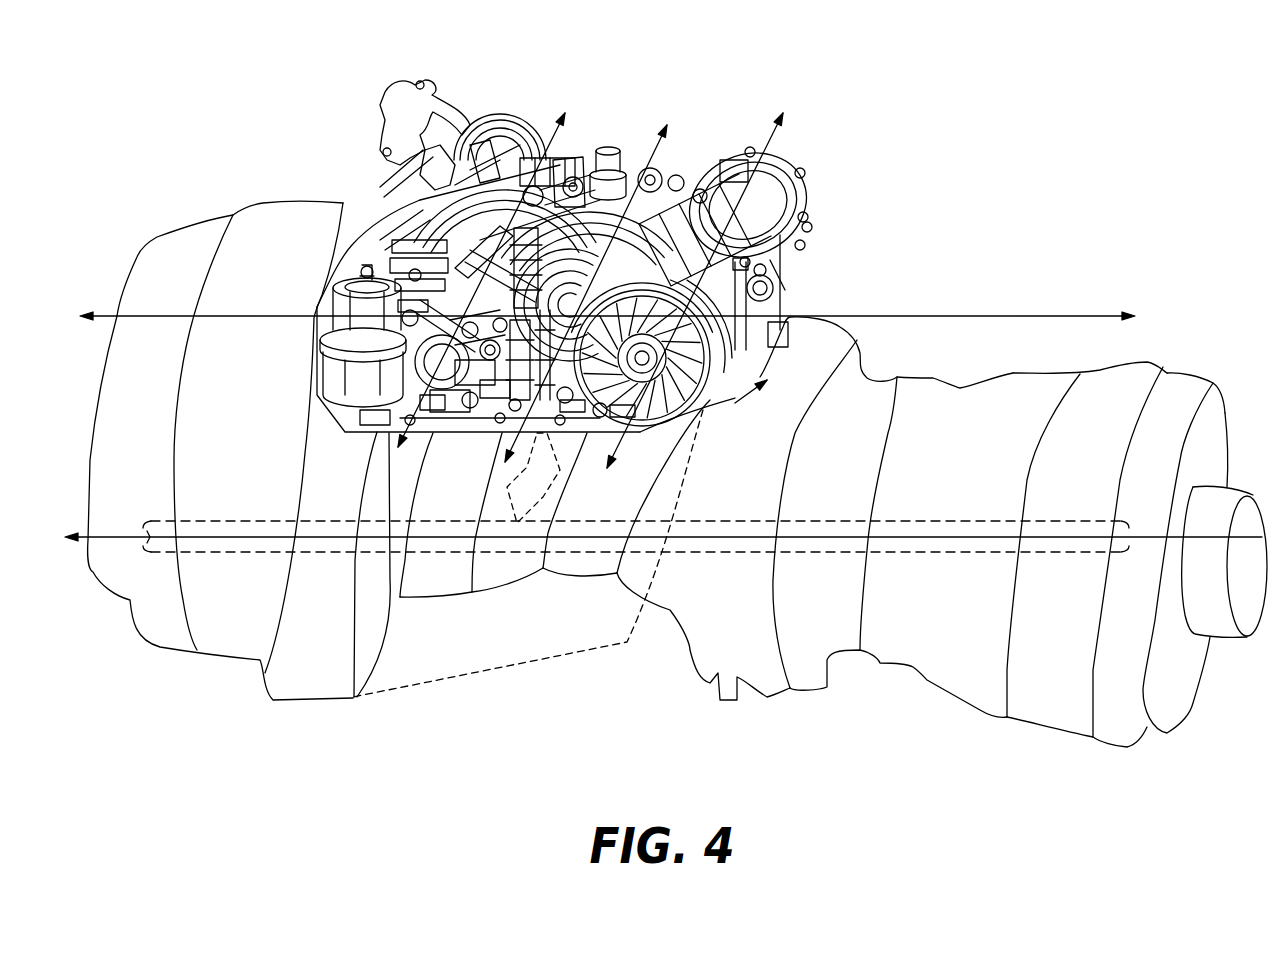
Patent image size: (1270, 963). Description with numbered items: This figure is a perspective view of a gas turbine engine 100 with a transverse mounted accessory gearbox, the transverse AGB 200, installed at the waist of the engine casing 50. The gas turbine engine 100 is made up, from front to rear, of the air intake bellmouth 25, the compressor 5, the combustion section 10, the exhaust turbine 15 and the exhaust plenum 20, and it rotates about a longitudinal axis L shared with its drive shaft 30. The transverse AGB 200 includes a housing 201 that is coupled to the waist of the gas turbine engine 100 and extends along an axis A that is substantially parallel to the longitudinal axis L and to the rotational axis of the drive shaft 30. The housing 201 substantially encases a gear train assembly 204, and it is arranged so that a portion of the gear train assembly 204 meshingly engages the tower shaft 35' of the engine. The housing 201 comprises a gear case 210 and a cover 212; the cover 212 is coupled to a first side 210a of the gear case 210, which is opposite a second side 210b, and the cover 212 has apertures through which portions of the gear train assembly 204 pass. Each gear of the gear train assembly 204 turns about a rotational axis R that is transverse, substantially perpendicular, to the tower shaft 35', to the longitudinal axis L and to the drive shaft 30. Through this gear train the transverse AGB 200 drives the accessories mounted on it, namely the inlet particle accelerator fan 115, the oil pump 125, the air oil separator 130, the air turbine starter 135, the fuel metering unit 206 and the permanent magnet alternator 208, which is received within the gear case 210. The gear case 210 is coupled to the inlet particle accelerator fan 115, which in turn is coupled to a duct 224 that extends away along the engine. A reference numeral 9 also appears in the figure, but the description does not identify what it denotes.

The compressor 5 is at (510, 580).
The rotational axis 9 is at (360, 428).
The combustion section 10 is at (847, 390).
The exhaust turbine 15 is at (1040, 398).
The exhaust plenum 20 is at (1222, 412).
The air intake bellmouth 25 is at (138, 257).
The drive shaft 30 is at (647, 600).
The tower shaft 35' is at (555, 478).
The engine casing 50 is at (1013, 373).
The gas turbine engine 100 is at (1175, 275).
The inlet particle accelerator fan 115 is at (745, 367).
The oil pump 125 is at (395, 198).
The air oil separator 130 is at (669, 173).
The air turbine starter 135 is at (787, 162).
The transverse mounted AGB 200 is at (722, 77).
The housing 201 is at (807, 295).
The gear train assembly 204 is at (632, 156).
The fuel metering unit 206 is at (492, 195).
The permanent magnet alternator 208 is at (782, 277).
The gear case 210 is at (582, 180).
The first side 210a is at (805, 244).
The second side 210b is at (800, 288).
The cover 212 is at (808, 217).
The duct 224 is at (470, 677).